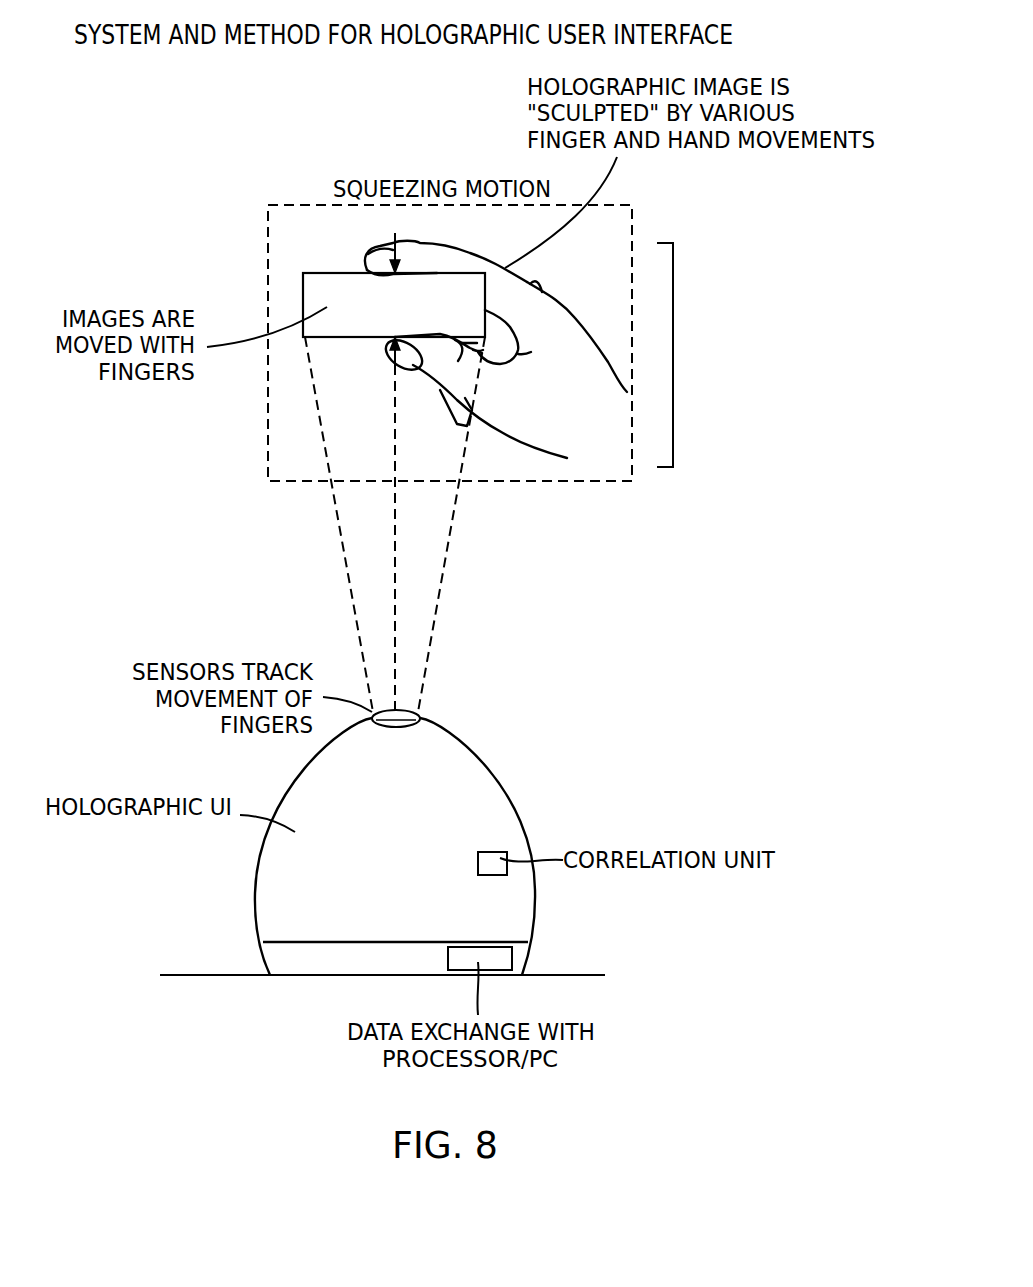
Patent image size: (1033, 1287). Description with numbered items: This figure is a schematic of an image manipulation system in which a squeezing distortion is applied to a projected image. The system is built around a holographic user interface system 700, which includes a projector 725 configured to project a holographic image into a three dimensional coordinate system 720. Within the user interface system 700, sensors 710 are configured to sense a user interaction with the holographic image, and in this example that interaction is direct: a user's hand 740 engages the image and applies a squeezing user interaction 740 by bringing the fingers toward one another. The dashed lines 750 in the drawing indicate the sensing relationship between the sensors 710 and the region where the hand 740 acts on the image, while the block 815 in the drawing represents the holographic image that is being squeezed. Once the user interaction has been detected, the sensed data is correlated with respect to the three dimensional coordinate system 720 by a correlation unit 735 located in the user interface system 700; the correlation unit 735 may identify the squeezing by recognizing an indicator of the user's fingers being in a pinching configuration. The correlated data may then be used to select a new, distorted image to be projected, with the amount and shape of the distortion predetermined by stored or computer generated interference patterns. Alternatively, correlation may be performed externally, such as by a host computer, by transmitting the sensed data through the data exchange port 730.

The holographic user interface system 700 is at (398, 822).
The sensors 710 is at (422, 713).
The three dimensional coordinate system 720 is at (674, 348).
The projector 725 is at (414, 727).
The data exchange port 730 is at (498, 955).
The correlation unit 735 is at (503, 875).
The user's hand 740 is at (268, 213).
The sensor tracking lines 750 is at (450, 540).
The holographic image 815 is at (358, 322).